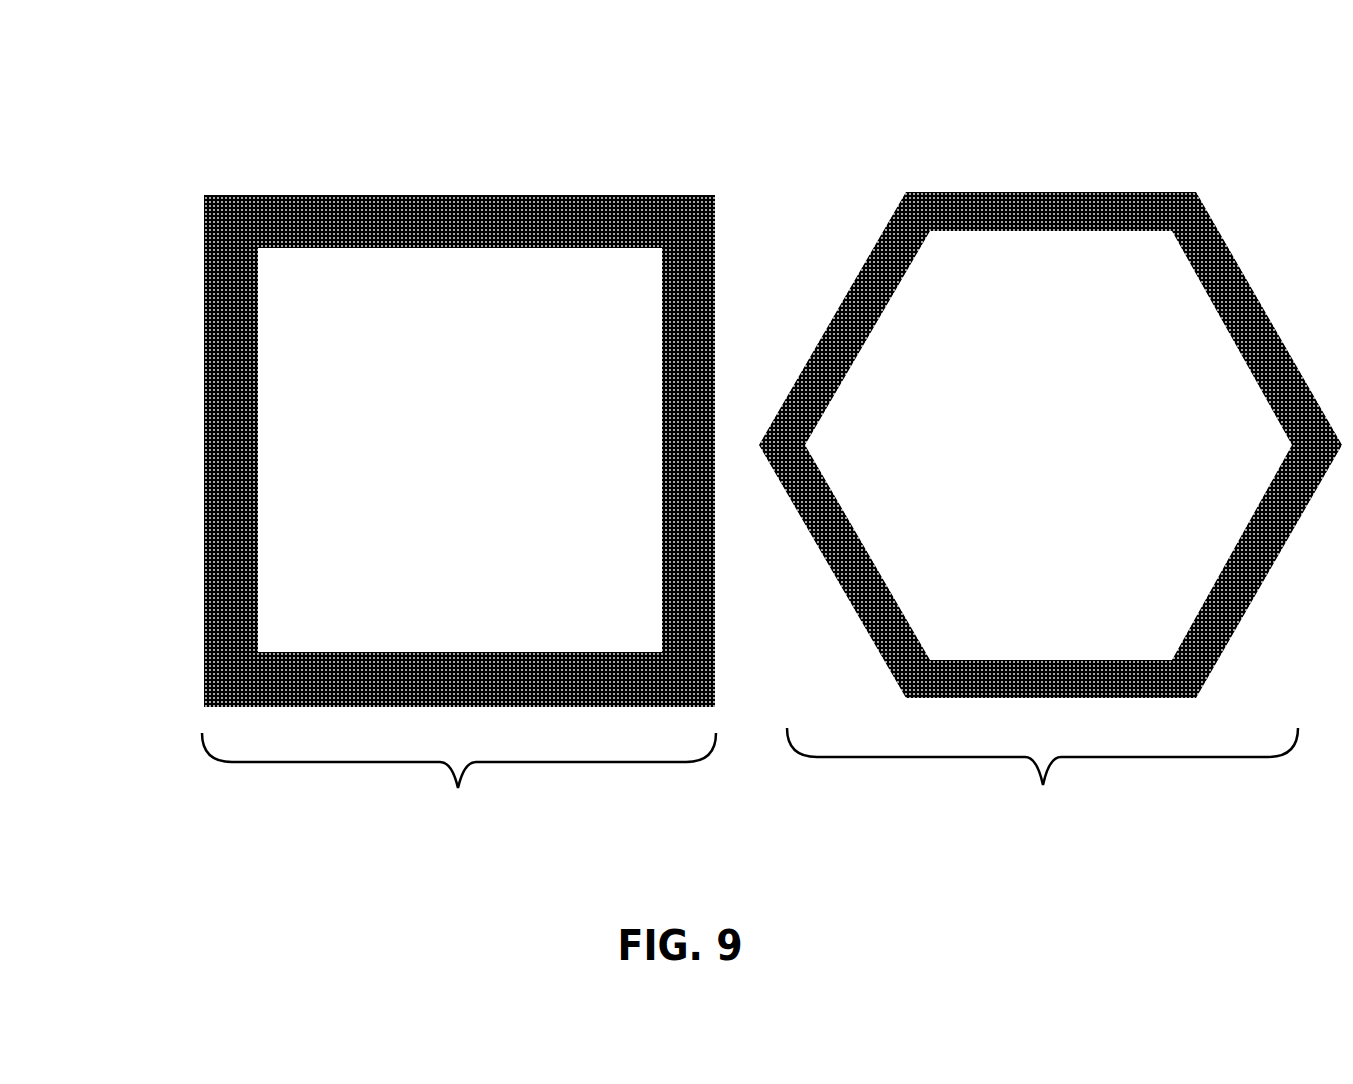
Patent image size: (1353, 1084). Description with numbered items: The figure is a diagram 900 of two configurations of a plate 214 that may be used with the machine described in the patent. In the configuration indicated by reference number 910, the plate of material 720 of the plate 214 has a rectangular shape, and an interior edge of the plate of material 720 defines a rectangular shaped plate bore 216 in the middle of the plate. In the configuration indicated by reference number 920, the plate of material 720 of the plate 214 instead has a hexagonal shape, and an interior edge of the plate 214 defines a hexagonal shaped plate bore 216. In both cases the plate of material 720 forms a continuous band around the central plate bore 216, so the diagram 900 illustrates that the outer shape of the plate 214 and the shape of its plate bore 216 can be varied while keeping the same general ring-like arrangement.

The diagram 900 is at (176, 64).
The rectangular plate configuration 910 is at (158, 144).
The hexagonal plate configuration 920 is at (823, 163).
The plate 214 is at (721, 397).
The plate bore 216 is at (445, 496).
The plate of material 720 is at (750, 775).